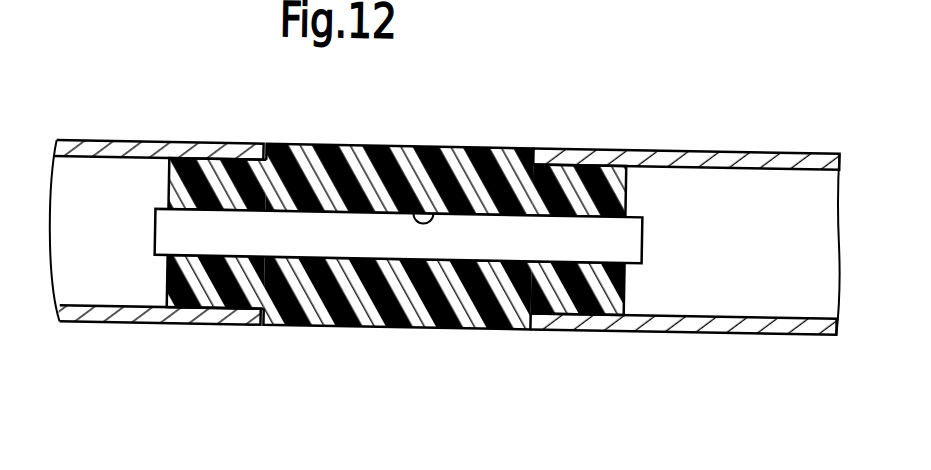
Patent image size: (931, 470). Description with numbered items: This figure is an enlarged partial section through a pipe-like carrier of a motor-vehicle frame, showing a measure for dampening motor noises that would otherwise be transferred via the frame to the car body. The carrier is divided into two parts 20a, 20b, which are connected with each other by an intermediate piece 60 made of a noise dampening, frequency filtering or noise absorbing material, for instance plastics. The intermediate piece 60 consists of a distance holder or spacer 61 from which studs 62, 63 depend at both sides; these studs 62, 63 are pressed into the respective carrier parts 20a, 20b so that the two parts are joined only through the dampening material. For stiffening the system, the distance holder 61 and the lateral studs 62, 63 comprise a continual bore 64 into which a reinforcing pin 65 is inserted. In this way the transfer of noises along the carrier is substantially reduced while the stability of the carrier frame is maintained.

The part of pipe-like carrier 20a is at (91, 147).
The part of pipe-like carrier 20b is at (682, 156).
The intermediate piece 60 is at (398, 257).
The distance holder 61 is at (386, 299).
The stud 62 is at (208, 304).
The stud 63 is at (579, 293).
The continual bore 64 is at (442, 192).
The reinforcing pin 65 is at (290, 257).